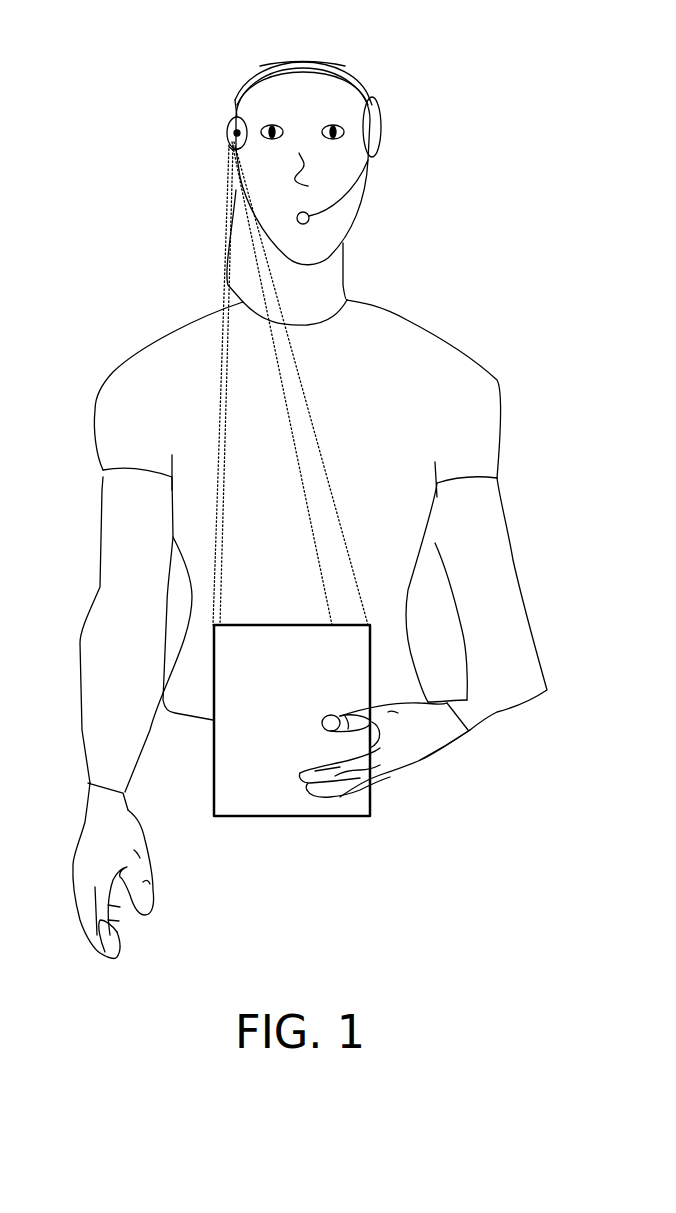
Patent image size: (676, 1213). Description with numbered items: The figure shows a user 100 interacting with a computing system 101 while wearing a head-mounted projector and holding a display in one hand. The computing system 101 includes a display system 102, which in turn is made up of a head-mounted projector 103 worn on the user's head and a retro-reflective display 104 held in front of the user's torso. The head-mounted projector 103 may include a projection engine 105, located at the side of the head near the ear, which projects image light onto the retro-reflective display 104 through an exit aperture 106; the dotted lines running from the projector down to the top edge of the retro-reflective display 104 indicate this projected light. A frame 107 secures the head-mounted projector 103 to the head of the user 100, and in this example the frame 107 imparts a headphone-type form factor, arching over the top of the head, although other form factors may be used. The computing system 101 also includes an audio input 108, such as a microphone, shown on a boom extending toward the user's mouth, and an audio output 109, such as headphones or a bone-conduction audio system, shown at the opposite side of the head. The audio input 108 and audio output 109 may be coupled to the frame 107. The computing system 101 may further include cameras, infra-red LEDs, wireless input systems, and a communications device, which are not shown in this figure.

The user 100 is at (310, 513).
The computing system 101 is at (481, 108).
The display system 102 is at (469, 183).
The head-mounted projector 103 is at (231, 45).
The retro-reflective display 104 is at (264, 688).
The projection engine 105 is at (234, 133).
The exit aperture 106 is at (232, 147).
The frame 107 is at (322, 62).
The audio input 108 is at (338, 233).
The audio output 109 is at (380, 132).